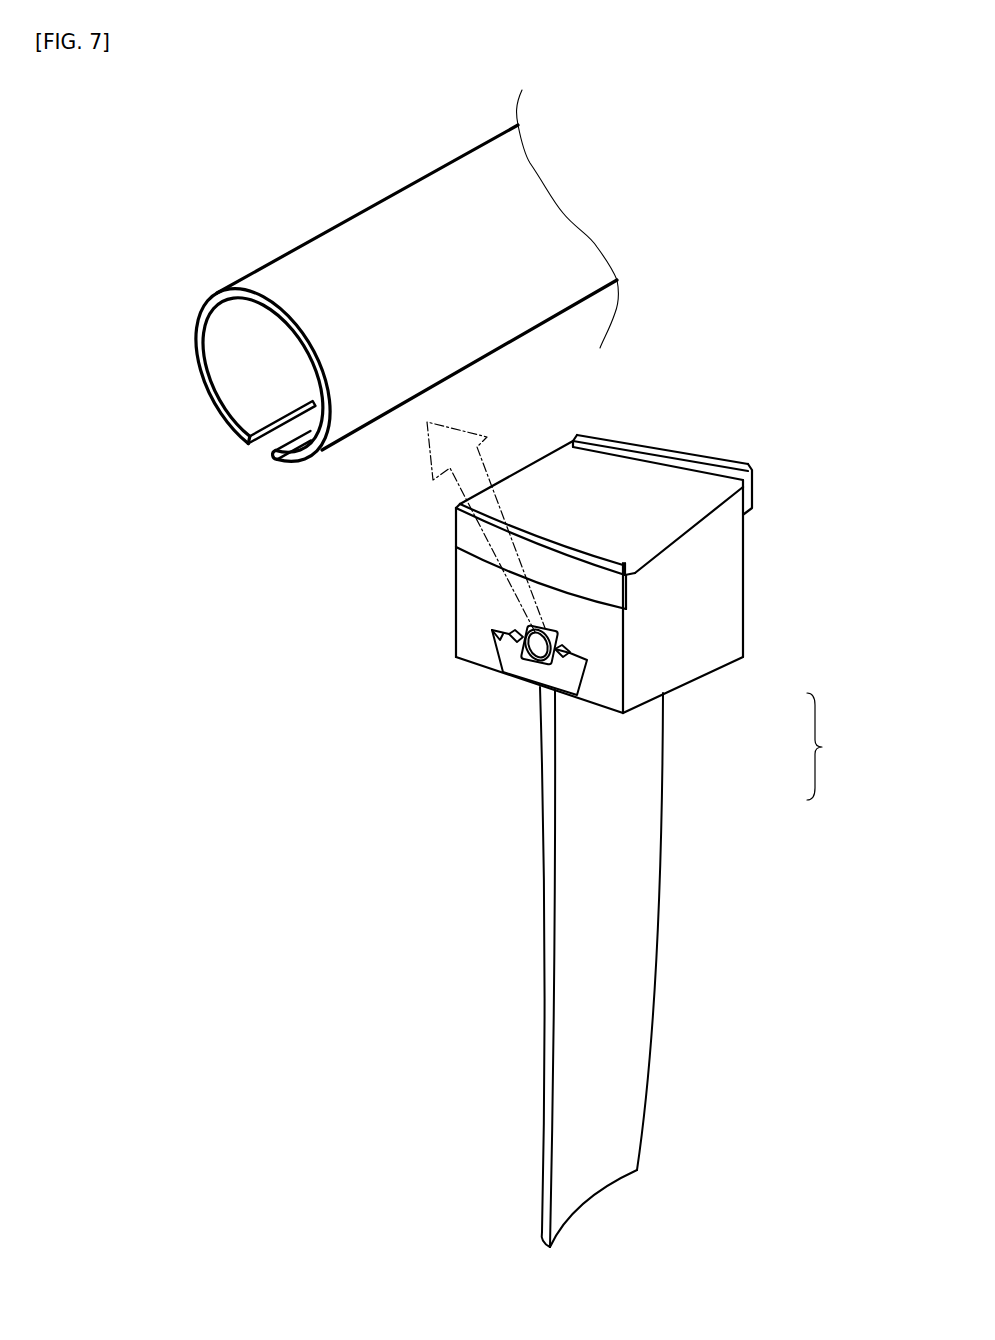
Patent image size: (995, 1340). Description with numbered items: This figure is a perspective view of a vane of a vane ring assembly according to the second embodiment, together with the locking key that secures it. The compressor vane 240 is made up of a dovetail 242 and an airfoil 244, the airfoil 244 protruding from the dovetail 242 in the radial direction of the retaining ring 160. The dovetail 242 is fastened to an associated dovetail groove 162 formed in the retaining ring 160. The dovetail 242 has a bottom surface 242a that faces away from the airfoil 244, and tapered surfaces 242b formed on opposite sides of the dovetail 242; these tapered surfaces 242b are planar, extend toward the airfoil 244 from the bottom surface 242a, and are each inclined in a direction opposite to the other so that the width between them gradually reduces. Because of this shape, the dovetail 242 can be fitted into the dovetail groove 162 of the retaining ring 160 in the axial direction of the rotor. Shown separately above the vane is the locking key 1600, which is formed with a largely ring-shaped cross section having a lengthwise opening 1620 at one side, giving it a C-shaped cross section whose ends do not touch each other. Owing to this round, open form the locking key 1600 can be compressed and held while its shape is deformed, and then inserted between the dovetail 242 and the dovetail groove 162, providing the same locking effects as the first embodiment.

The locking key 1600 is at (345, 257).
The lengthwise opening 1620 is at (302, 422).
The retaining ring 160 is at (657, 483).
The dovetail groove 162 is at (573, 647).
The compressor vane 240 is at (835, 746).
The dovetail 242 is at (560, 677).
The bottom surface 242a is at (497, 627).
The tapered surfaces 242b is at (570, 703).
The airfoil 244 is at (607, 817).